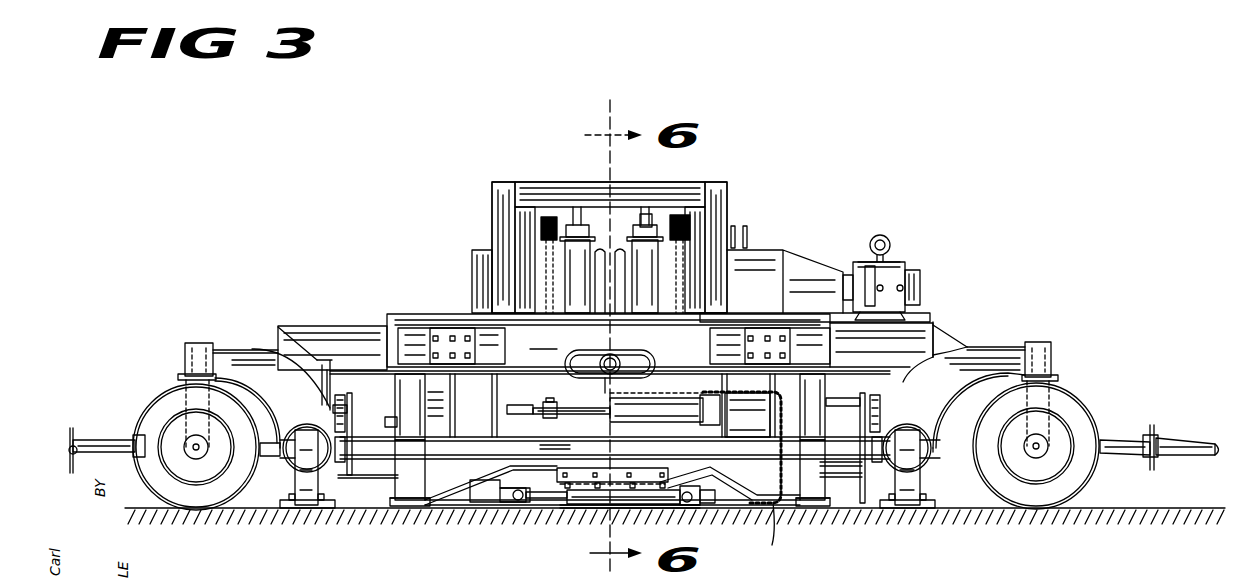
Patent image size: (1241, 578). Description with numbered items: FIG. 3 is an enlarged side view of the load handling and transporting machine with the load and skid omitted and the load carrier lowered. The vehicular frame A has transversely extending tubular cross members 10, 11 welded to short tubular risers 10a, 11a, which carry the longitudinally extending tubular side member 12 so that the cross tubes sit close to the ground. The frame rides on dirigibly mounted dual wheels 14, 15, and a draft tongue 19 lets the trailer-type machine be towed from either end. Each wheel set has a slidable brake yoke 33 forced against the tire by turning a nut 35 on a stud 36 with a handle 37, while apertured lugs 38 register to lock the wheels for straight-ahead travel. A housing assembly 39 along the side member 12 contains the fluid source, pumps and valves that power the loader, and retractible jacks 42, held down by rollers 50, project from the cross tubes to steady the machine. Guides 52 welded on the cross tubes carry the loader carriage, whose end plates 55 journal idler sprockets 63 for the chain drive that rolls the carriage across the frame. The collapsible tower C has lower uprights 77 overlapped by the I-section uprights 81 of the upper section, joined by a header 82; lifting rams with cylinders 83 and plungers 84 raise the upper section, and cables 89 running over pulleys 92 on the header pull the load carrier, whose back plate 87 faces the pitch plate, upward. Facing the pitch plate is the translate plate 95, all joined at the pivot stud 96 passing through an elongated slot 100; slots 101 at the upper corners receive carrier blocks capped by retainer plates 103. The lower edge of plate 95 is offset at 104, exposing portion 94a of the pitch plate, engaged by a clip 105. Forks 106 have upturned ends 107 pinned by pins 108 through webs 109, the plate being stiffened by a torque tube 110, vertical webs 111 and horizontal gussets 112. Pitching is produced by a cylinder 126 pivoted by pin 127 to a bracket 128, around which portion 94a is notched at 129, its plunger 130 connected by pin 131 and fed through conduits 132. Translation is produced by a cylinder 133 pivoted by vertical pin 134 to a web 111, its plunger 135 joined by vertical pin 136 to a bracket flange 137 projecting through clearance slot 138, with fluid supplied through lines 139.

The cross member 10 is at (921, 470).
The tubular riser 10a is at (950, 348).
The cross member 11 is at (296, 460).
The tubular riser 11a is at (308, 364).
The side member 12 is at (642, 340).
The dual wheels 14 is at (1092, 402).
The dual wheels 15 is at (158, 386).
The draft tongue 19 is at (1201, 441).
The brake yoke 33 is at (113, 440).
The nut 35 is at (1166, 440).
The stud 36 is at (70, 444).
The handle 37 is at (80, 448).
The apertured lug 38 is at (1055, 372).
The housing assembly 39 is at (781, 259).
The jack 42 is at (313, 492).
The roller 50 is at (311, 430).
The guide 52 is at (346, 462).
The end plate 55 is at (353, 465).
The idler sprocket 63 is at (341, 395).
The upright 77 is at (522, 278).
The upright 81 is at (500, 200).
The header 82 is at (572, 190).
The cylinder 83 is at (611, 260).
The plunger 84 is at (640, 220).
The back plate 87 is at (481, 506).
The cable 89 is at (520, 241).
The pulley 92 is at (686, 216).
The exposed portion of pitch plate 94a is at (521, 501).
The translate plate 95 is at (543, 341).
The pivot stud 96 is at (631, 350).
The horizontally elongated slot 100 is at (603, 360).
The elongated rectangular slot 101 is at (488, 330).
The retainer plate 103 is at (429, 329).
The upwardly offset lower edge 104 is at (547, 475).
The clip 105 is at (634, 483).
The load handling fork 106 is at (406, 508).
The upwardly turned end 107 is at (396, 508).
The pin 108 is at (386, 422).
The vertical web 109 is at (396, 388).
The torque tube 110 is at (486, 440).
The vertical web 111 is at (492, 392).
The horizontal gusset 112 is at (515, 405).
The cylinder 126 is at (646, 505).
The horizontal pin 127 is at (689, 503).
The bracket 128 is at (711, 505).
The notch 129 is at (715, 478).
The plunger 130 is at (579, 506).
The horizontal pivot pin 131 is at (506, 503).
The flexible conduit 132 is at (696, 487).
The cylinder 133 is at (656, 407).
The vertical pivot pin 134 is at (726, 422).
The plunger 135 is at (606, 378).
The vertical pin 136 is at (550, 398).
The bracket flange 137 is at (581, 415).
The elongated clearance slot 138 is at (540, 452).
The flexible line 139 is at (772, 545).
The vehicular frame A is at (940, 316).
The tower assembly C is at (738, 204).